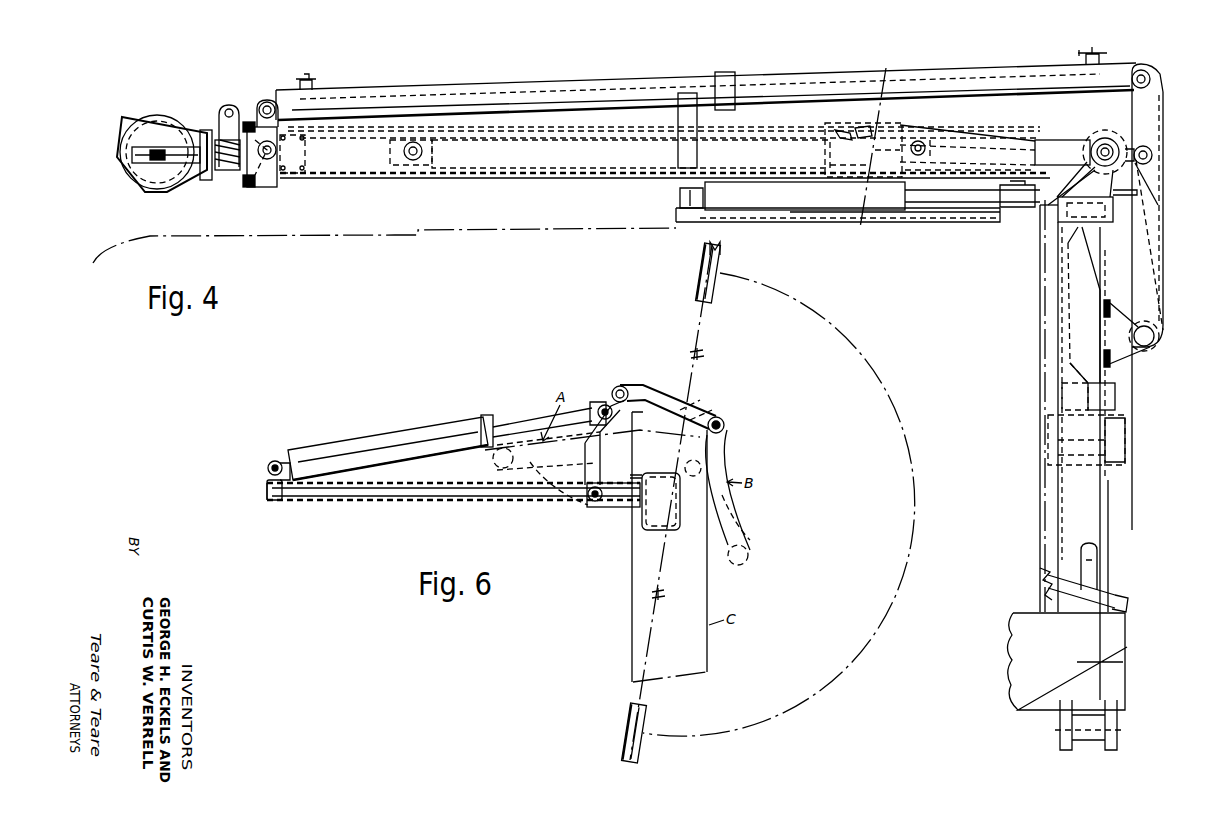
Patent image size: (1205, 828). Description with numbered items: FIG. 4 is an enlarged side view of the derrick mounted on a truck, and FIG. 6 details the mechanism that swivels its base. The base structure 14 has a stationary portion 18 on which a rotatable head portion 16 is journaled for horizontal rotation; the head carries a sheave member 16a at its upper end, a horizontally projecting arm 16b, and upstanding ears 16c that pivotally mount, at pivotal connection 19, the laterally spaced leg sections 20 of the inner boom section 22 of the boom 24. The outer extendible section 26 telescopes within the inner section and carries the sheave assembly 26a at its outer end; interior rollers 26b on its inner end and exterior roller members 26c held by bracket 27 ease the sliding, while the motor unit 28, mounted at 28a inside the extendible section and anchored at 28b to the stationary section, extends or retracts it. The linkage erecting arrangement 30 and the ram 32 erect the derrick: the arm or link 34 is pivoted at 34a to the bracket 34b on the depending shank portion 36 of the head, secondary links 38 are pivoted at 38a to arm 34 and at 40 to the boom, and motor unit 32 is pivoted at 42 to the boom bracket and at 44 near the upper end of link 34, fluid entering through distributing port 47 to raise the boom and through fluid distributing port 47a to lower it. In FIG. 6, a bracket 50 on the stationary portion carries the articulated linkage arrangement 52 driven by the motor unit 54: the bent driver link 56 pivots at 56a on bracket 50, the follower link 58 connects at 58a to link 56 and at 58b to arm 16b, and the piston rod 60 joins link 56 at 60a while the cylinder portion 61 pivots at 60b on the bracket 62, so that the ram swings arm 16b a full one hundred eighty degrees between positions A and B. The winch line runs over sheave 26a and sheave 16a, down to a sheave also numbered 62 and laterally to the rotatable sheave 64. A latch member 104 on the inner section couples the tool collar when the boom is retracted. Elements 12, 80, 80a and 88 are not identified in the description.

In FIG. 4, the boom 12 is at (623, 78).
In FIG. 4, the base structure 14 is at (1113, 381).
In FIG. 4, the rotatable head portion 16 is at (1080, 190).
In FIG. 4, the sheave member 16a is at (1097, 140).
In FIG. 6, the horizontally projecting arm 16b is at (640, 449).
In FIG. 4, the upstanding ears 16c is at (1058, 200).
In FIG. 4, the stationary portion 18 is at (1067, 298).
In FIG. 6, the stationary portion 18 is at (667, 530).
In FIG. 4, the pivotal connection 19 is at (1106, 143).
In FIG. 4, the leg sections 20 is at (965, 138).
In FIG. 4, the inner boom section 22 is at (523, 128).
In FIG. 4, the boom 24 is at (413, 125).
In FIG. 6, the boom 24 is at (704, 355).
In FIG. 4, the outer extendible section 26 is at (475, 130).
In FIG. 4, the sheave assembly 26a is at (165, 122).
In FIG. 6, the sheave assembly 26a is at (719, 300).
In FIG. 4, the interior rollers 26b is at (863, 146).
In FIG. 4, the exterior roller members 26c is at (248, 122).
In FIG. 4, the bracket 27 is at (268, 178).
In FIG. 4, the motor unit 28 is at (500, 175).
In FIG. 4, the motor unit mounting 28a is at (412, 170).
In FIG. 4, the piston rod anchor 28b is at (919, 140).
In FIG. 4, the linkage erecting arrangement 30 is at (1172, 240).
In FIG. 4, the motor unit 32 is at (791, 76).
In FIG. 4, the arm or link 34 is at (1156, 262).
In FIG. 4, the pivotal mount 34a is at (1160, 338).
In FIG. 4, the bracket 34b is at (1150, 350).
In FIG. 4, the depending shank portion 36 is at (1095, 278).
In FIG. 4, the secondary links 38 is at (990, 143).
In FIG. 4, the pivotal connection 38a is at (1164, 150).
In FIG. 4, the pivotal connection 40 is at (930, 140).
In FIG. 4, the pivotal connection 42 is at (268, 102).
In FIG. 4, the pivotal connection 44 is at (1151, 78).
In FIG. 4, the distributing port 47 is at (313, 78).
In FIG. 4, the fluid distributing port 47a is at (1100, 56).
In FIG. 6, the bracket 50 is at (615, 505).
In FIG. 6, the articulated linkage arrangement 52 is at (669, 391).
In FIG. 4, the motor unit 54 is at (858, 202).
In FIG. 6, the motor unit 54 is at (399, 428).
In FIG. 6, the driver link 56 is at (530, 493).
In FIG. 6, the pivot 56a is at (592, 500).
In FIG. 6, the follower link 58 is at (695, 415).
In FIG. 6, the pivotal connection 58a is at (622, 386).
In FIG. 6, the pivotal connection 58b is at (726, 423).
In FIG. 4, the piston rod 60 is at (978, 192).
In FIG. 6, the piston rod 60 is at (510, 427).
In FIG. 6, the pivotal connection 60a is at (603, 406).
In FIG. 6, the pivot 60b is at (274, 461).
In FIG. 6, the cylinder portion 61 is at (318, 452).
In FIG. 4, the bracket 62 is at (1099, 556).
In FIG. 6, the bracket 62 is at (267, 484).
In FIG. 4, the rotatable sheave 64 is at (1105, 590).
In FIG. 4, the bracket 80 is at (220, 124).
In FIG. 4, the bracket hole 80a is at (228, 108).
In FIG. 4, the stop block 88 is at (688, 93).
In FIG. 4, the latch member 104 is at (210, 182).